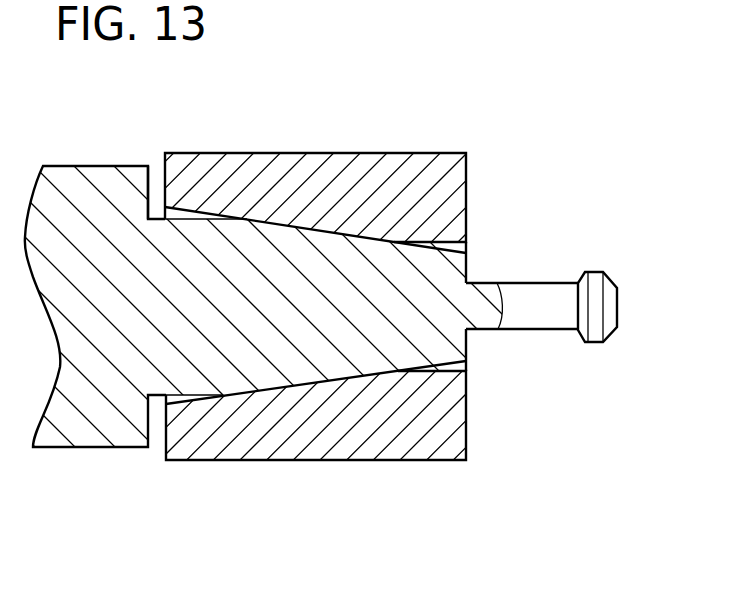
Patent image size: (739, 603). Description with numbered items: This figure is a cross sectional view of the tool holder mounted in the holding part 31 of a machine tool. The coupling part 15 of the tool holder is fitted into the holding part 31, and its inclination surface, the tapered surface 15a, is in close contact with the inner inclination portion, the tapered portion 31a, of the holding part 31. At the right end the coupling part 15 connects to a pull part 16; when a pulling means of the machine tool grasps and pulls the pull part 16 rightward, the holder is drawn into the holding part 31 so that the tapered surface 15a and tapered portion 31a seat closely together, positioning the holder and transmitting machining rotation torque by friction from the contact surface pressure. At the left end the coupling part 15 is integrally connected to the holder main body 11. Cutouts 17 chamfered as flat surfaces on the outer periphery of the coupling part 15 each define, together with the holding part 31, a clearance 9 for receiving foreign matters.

The holder main body 11 is at (83, 185).
The cutout 17 is at (175, 223).
The clearance 9 is at (187, 215).
The holding part 31 is at (293, 158).
The tapered portion 31a is at (302, 232).
The coupling part 15 is at (347, 362).
The tapered surface 15a is at (307, 385).
The pull part 16 is at (535, 303).